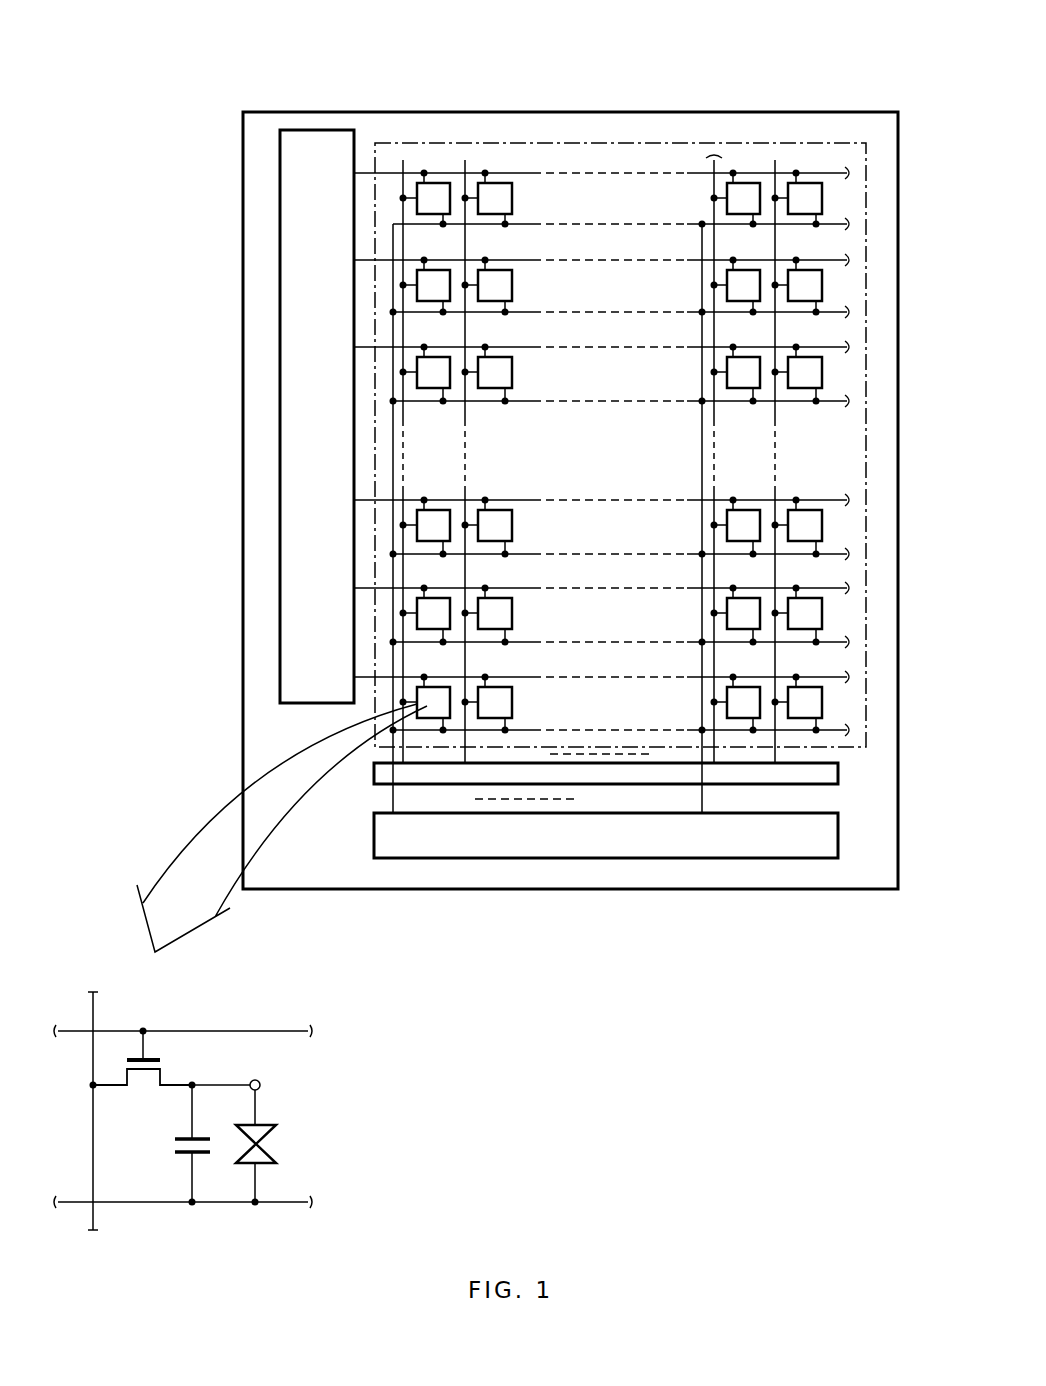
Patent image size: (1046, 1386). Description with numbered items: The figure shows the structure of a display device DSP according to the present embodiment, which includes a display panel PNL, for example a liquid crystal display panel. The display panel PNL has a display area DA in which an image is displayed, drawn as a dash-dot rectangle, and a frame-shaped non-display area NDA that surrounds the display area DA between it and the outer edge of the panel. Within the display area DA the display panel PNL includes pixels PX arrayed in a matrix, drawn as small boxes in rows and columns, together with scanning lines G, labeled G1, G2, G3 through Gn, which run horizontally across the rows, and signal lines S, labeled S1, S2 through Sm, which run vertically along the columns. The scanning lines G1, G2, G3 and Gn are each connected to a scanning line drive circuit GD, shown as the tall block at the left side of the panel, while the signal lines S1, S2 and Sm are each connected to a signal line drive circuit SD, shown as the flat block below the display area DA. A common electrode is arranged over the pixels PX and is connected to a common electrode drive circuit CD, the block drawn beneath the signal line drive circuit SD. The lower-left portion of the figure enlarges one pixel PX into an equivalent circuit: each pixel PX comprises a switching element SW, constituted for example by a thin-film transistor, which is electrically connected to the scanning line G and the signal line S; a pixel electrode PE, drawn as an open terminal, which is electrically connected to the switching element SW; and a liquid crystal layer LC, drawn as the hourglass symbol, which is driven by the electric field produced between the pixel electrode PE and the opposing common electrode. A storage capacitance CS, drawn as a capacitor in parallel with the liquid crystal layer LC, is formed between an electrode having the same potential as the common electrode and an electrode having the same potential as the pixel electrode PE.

The display device DSP is at (884, 76).
The display panel PNL is at (876, 878).
The scanning line drive circuit GD is at (319, 130).
The signal line drive circuit SD is at (839, 770).
The common electrode drive circuit CD is at (839, 835).
The display area DA is at (601, 150).
The non-display area NDA is at (705, 128).
The signal line S1 is at (408, 157).
The signal line S2 is at (470, 157).
The signal line Sm is at (783, 157).
The scanning line G1 is at (847, 171).
The scanning line G2 is at (847, 258).
The scanning line G3 is at (847, 345).
The scanning line Gn is at (847, 675).
The pixel PX is at (512, 197).
The scanning line G is at (77, 1030).
The signal line S is at (93, 1140).
The switching element SW is at (176, 1069).
The pixel electrode PE is at (261, 1085).
The storage capacitance CS is at (165, 1135).
The liquid crystal layer LC is at (284, 1141).